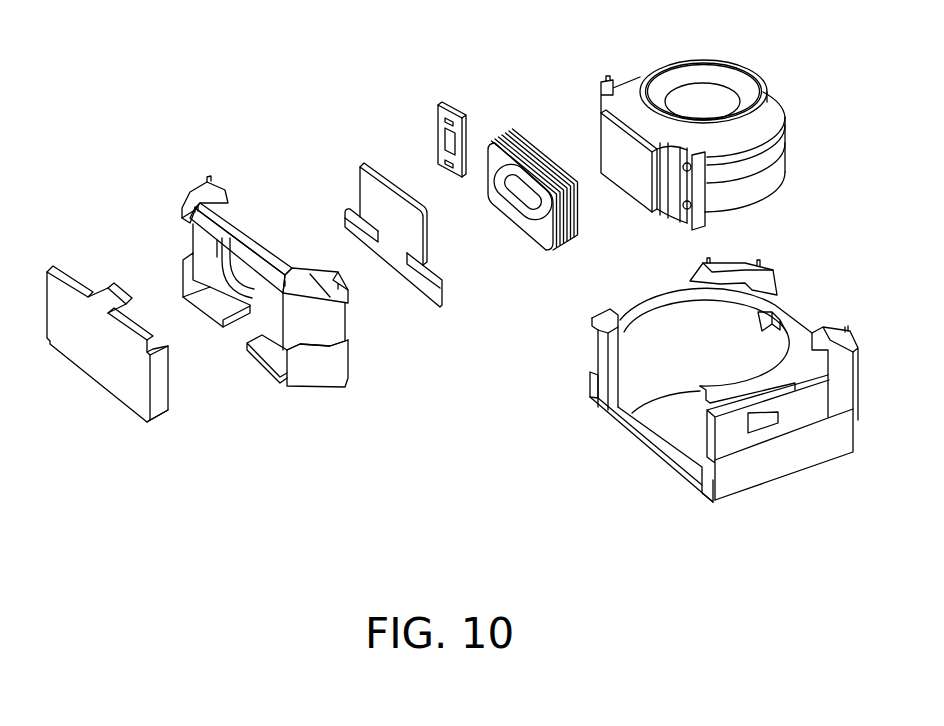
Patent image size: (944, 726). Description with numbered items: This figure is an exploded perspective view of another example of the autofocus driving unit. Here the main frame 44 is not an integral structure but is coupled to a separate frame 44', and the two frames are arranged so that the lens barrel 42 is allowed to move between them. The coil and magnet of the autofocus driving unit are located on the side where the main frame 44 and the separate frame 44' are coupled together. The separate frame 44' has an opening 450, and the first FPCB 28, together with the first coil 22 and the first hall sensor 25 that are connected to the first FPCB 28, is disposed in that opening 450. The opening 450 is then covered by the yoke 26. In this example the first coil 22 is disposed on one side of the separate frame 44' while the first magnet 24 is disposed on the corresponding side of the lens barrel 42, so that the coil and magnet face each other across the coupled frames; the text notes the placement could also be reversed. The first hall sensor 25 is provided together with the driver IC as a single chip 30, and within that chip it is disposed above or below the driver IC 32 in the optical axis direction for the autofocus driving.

The first coil 22 is at (522, 172).
The first magnet 24 is at (608, 140).
The first hall sensor 25 is at (450, 120).
The yoke 26 is at (113, 375).
The first FPCB 28 is at (362, 193).
The single chip 30 is at (437, 130).
The driver IC 32 is at (450, 142).
The lens barrel 42 is at (770, 113).
The main frame 44 is at (724, 411).
The separate frame 44' is at (297, 406).
The opening 450 is at (252, 299).